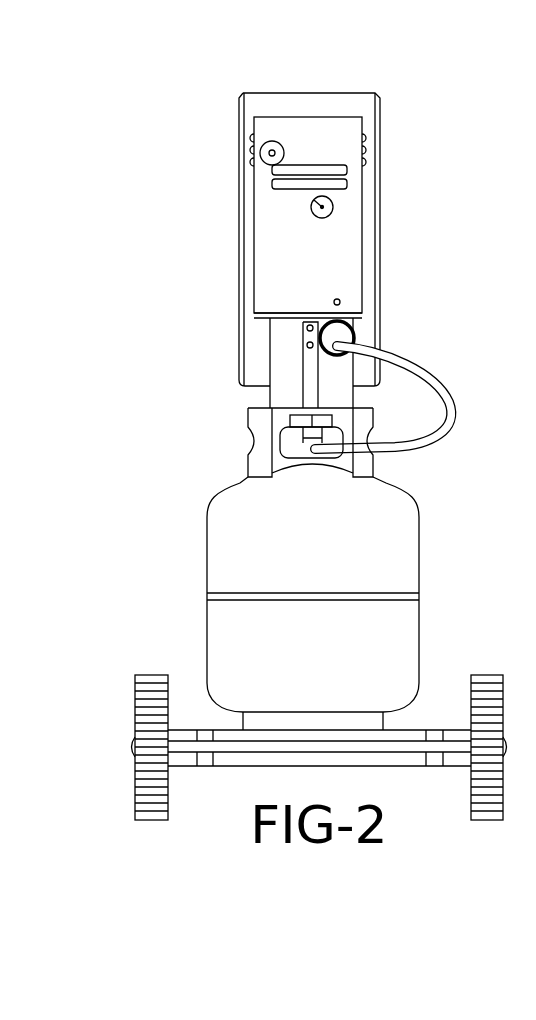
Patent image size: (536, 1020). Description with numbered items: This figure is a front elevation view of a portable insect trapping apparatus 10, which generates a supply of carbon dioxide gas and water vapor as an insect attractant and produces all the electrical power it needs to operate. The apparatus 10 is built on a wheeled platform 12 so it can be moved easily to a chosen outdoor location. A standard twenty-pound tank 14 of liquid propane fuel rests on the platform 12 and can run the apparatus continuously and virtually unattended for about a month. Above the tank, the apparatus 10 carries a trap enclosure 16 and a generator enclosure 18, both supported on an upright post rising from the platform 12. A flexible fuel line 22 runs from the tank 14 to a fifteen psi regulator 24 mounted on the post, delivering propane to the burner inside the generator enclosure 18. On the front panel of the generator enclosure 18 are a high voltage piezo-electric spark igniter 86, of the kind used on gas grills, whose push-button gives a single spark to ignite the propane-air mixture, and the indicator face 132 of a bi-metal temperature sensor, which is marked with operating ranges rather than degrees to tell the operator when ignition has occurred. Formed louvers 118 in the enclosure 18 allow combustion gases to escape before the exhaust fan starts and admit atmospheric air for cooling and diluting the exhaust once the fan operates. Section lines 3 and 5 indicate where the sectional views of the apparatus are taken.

The portable insect trapping apparatus 10 is at (124, 240).
The wheeled platform 12 is at (207, 730).
The tank 14 is at (207, 550).
The trap enclosure 16 is at (238, 170).
The generator enclosure 18 is at (256, 270).
The flexible fuel line 22 is at (437, 377).
The regulator 24 is at (352, 325).
The piezo-electric spark igniter 86 is at (267, 143).
The louvers 118 is at (367, 151).
The indicator face 132 is at (332, 213).
The section line 3- 3 is at (312, 355).
The section line 5- 5 is at (358, 337).